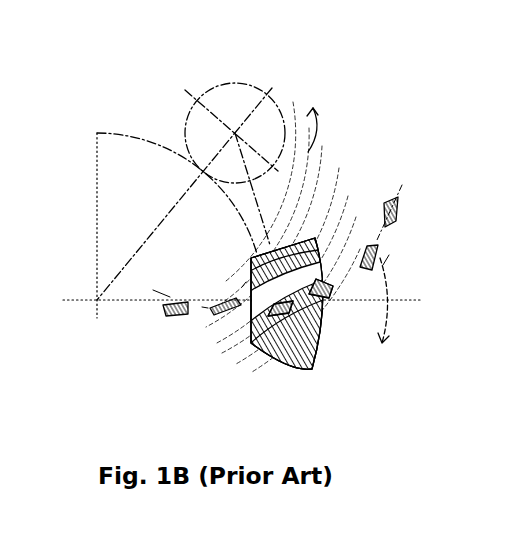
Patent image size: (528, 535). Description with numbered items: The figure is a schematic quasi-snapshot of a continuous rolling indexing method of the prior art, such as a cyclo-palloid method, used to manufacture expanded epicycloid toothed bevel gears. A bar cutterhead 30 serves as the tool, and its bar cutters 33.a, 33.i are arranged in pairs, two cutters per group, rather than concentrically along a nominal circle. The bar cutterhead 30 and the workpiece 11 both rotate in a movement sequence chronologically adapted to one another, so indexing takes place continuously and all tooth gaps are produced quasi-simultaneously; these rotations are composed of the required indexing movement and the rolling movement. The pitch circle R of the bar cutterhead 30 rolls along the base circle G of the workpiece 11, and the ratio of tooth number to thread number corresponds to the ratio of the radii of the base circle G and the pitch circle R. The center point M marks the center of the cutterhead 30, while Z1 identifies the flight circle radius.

The base circle G is at (89, 134).
The pitch circle R is at (231, 82).
The center point of the cutterhead M is at (233, 133).
The flight circle radius Z1 is at (262, 210).
The workpiece 11 is at (313, 370).
The bar cutterhead 30 is at (408, 198).
The bar cutter 33.i is at (232, 302).
The bar cutter 33.a is at (170, 316).